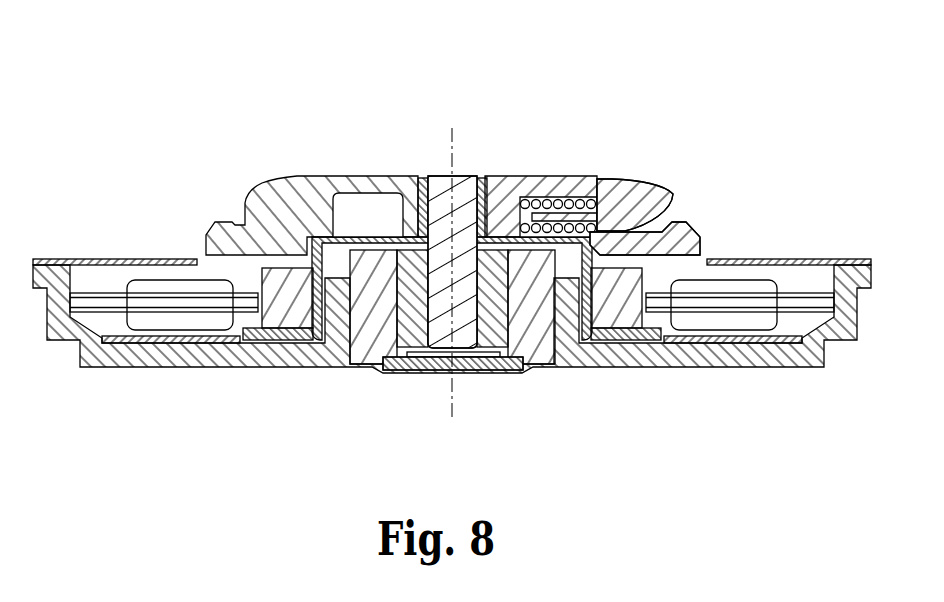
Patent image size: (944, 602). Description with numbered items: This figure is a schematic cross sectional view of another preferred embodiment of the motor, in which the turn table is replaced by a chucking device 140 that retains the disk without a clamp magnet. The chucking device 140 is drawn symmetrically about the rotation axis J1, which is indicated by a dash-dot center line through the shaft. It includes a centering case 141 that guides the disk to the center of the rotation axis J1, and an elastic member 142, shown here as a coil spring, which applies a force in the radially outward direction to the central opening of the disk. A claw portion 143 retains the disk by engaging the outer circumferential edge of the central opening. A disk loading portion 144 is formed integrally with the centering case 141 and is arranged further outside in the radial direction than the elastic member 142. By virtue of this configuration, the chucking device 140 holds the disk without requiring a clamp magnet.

The chucking device 140 is at (479, 140).
The centering case 141 is at (299, 192).
The elastic member 142 is at (554, 198).
The claw portion 143 is at (630, 207).
The disk loading portion 144 is at (681, 244).
The rotation axis J1 is at (451, 146).